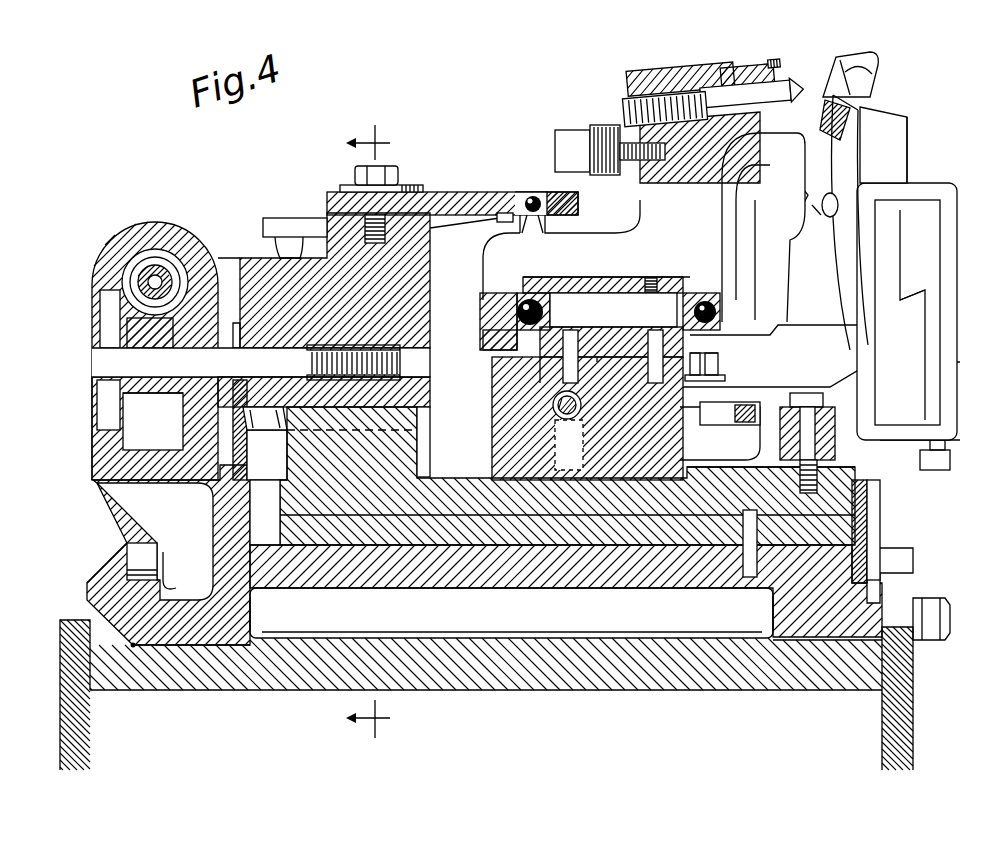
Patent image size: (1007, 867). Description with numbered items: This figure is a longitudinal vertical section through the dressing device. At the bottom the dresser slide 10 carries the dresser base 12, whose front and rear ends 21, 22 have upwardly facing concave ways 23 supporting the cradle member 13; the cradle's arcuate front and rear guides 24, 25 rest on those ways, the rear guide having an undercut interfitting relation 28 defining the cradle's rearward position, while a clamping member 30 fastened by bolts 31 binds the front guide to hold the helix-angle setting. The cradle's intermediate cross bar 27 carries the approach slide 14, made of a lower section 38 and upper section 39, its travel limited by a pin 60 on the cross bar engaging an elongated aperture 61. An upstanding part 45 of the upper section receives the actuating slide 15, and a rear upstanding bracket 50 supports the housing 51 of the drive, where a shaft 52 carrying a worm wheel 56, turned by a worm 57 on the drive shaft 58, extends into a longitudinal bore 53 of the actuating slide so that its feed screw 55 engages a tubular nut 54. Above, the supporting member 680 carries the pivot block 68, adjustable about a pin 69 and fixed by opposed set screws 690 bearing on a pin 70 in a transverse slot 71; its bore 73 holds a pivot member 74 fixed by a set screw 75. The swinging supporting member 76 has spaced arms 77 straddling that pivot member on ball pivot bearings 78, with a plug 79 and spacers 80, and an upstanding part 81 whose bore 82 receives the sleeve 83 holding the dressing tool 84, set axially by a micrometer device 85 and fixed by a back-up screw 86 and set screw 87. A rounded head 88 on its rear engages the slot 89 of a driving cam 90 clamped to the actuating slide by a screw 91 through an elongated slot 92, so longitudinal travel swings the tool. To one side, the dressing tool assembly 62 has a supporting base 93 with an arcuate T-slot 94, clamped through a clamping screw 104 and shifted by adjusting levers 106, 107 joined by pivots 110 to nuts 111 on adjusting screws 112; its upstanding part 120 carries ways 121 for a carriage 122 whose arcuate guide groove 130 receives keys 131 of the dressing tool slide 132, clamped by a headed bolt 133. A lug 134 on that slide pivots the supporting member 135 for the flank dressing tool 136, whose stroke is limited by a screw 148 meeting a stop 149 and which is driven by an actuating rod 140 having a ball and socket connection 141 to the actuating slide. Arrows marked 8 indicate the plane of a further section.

The section line 8- 8 is at (377, 431).
The dresser slide 10 is at (265, 704).
The dresser base 12 is at (487, 691).
The cradle member 13 is at (208, 551).
The approach slide 14 is at (290, 500).
The actuating slide 15 is at (254, 273).
The front end 21 is at (882, 602).
The rear end 22 is at (90, 608).
The concave ways 23 is at (200, 642).
The front guide 24 is at (770, 603).
The rear guide 25 is at (253, 620).
The intermediate cross bar 27 is at (450, 584).
The undercut interfitting relation 28 is at (133, 641).
The clamping member 30 is at (913, 572).
The bolts 31 is at (950, 618).
The lower section 38 is at (520, 538).
The upper section 39 is at (462, 505).
The upstanding part 45 is at (290, 452).
The upstanding bracket 50 is at (92, 461).
The housing 51 is at (143, 238).
The shaft 52 is at (264, 352).
The longitudinal bore 53 is at (324, 392).
The tubular nut 54 is at (400, 348).
The feed screw 55 is at (356, 348).
The worm wheel 56 is at (174, 325).
The worm 57 is at (218, 263).
The drive shaft 58 is at (157, 251).
The pin 60 is at (743, 526).
The elongated aperture 61 is at (758, 514).
The dressing tool assembly 62 is at (915, 162).
The pivot block 68 is at (588, 280).
The pin 69 is at (648, 379).
The pin 70 is at (562, 392).
The transversely extending slot 71 is at (596, 368).
The longitudinally extending bore 73 is at (603, 286).
The pivot member 74 is at (611, 342).
The set screw 75 is at (605, 323).
The supporting member 76 is at (493, 253).
The spaced arms 77 is at (486, 349).
The pivot bearings 78 is at (702, 293).
The plug 79 is at (482, 323).
The spacers 80 is at (530, 298).
The upstanding part 81 is at (652, 192).
The bore 82 is at (747, 78).
The supporting sleeve 83 is at (711, 66).
The dressing tool 84 is at (778, 92).
The micrometer device 85 is at (598, 131).
The back-up screw 86 is at (622, 104).
The set screw 87 is at (776, 72).
The rounded head 88 is at (534, 194).
The slot 89 is at (525, 195).
The driving cam 90 is at (470, 185).
The clamping screw 91 is at (392, 175).
The longitudinally elongated slot 92 is at (348, 192).
The supporting base 93 is at (893, 478).
The T-slot 94 is at (950, 461).
The clamping screw 104 is at (720, 375).
The adjusting lever 106 is at (724, 442).
The adjusting lever 107 is at (835, 427).
The pivots 110 is at (735, 402).
The nut 111 is at (584, 401).
The adjusting screw 112 is at (582, 408).
The upstanding part 120 is at (955, 214).
The ways 121 is at (920, 322).
The carriage 122 is at (900, 125).
The arcuate guide groove 130 is at (872, 90).
The keys 131 is at (823, 122).
The dressing tool slide 132 is at (858, 163).
The headed bolt 133 is at (806, 181).
The lug 134 is at (781, 337).
The supporting member 135 is at (760, 223).
The dressing tool 136 is at (779, 148).
The actuating rod 140 is at (632, 202).
The ball and socket connection 141 is at (296, 216).
The screw 148 is at (815, 212).
The stop 149 is at (817, 225).
The supporting member 680 is at (495, 421).
The set screws 690 is at (560, 376).